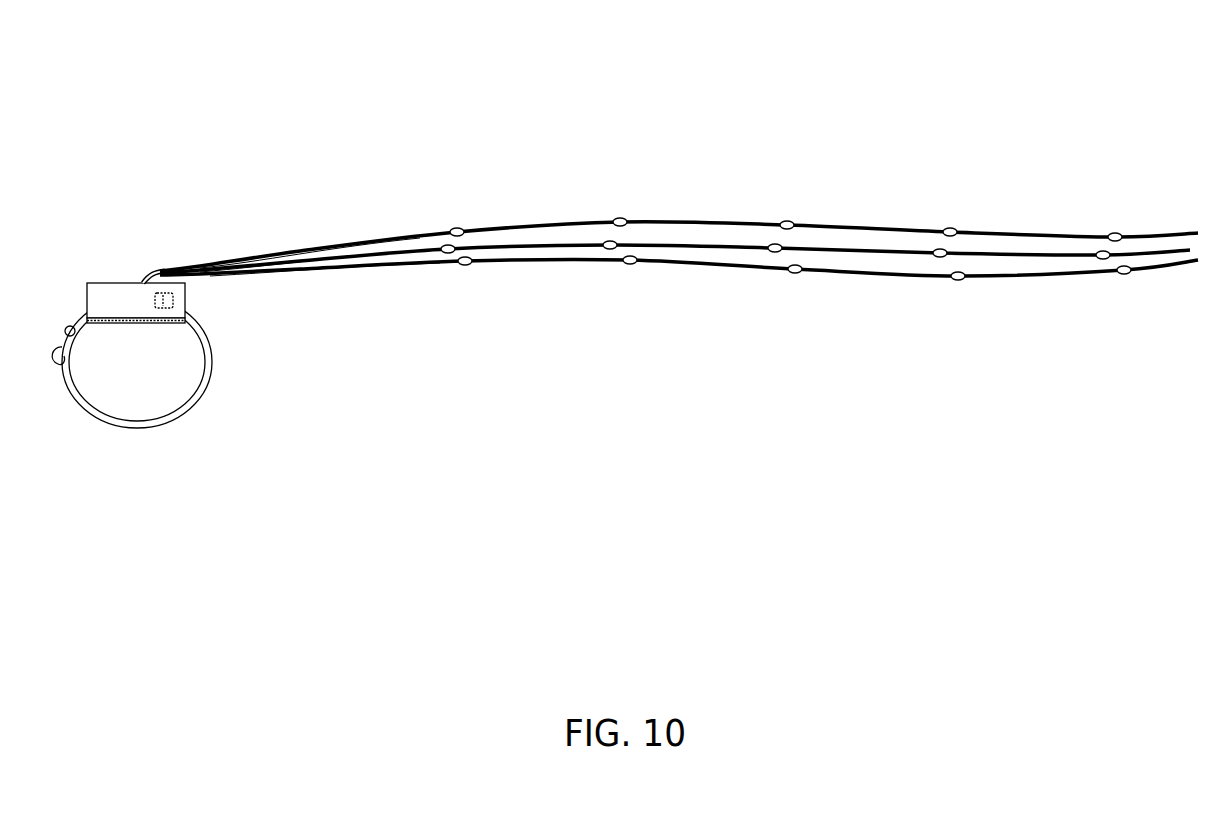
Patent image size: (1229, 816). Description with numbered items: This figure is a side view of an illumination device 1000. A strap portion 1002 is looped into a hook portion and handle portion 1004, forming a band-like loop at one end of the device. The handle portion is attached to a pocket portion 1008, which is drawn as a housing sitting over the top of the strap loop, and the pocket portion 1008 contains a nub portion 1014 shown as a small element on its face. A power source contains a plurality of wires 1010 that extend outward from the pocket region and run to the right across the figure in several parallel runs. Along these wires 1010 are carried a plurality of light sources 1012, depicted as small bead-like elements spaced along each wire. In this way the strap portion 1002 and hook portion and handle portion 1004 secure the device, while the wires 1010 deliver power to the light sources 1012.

The illumination device 1000 is at (652, 90).
The strap portion 1002 is at (183, 407).
The hook portion and handle portion 1004 is at (63, 332).
The pocket portion 1008 is at (120, 283).
The wires 1010 is at (300, 253).
The light sources 1012 is at (785, 223).
The nub portion 1014 is at (176, 299).